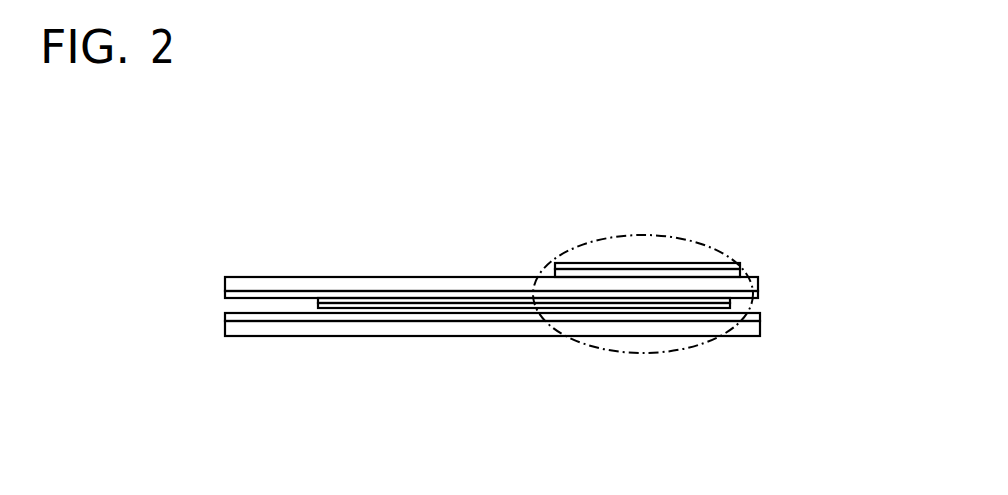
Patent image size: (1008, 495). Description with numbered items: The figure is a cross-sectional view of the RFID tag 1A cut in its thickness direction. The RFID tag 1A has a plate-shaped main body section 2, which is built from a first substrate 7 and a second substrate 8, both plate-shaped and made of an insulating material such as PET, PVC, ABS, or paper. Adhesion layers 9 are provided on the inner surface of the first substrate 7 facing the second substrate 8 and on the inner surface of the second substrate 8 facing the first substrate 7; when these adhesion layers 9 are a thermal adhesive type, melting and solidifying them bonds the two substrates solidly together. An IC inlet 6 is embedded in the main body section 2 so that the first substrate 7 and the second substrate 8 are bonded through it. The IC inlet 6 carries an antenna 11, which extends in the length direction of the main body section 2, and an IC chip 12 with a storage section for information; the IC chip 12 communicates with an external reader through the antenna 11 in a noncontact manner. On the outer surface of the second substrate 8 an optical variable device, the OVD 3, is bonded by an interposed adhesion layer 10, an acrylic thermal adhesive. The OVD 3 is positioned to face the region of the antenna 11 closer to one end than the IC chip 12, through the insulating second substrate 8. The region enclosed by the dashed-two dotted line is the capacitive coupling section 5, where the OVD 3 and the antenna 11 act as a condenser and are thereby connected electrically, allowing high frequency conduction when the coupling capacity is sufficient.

The RFID tag 1A is at (257, 178).
The main body section 2 is at (833, 248).
The optical variable device (OVD) 3 is at (638, 265).
The capacitive coupling section 5 is at (592, 243).
The IC inlet 6 is at (548, 415).
The first substrate 7 is at (638, 325).
The second substrate 8 is at (252, 285).
The adhesion layers 9 is at (226, 298).
The adhesion layer 10 is at (747, 271).
The antenna 11 is at (452, 308).
The IC chip 12 is at (520, 300).